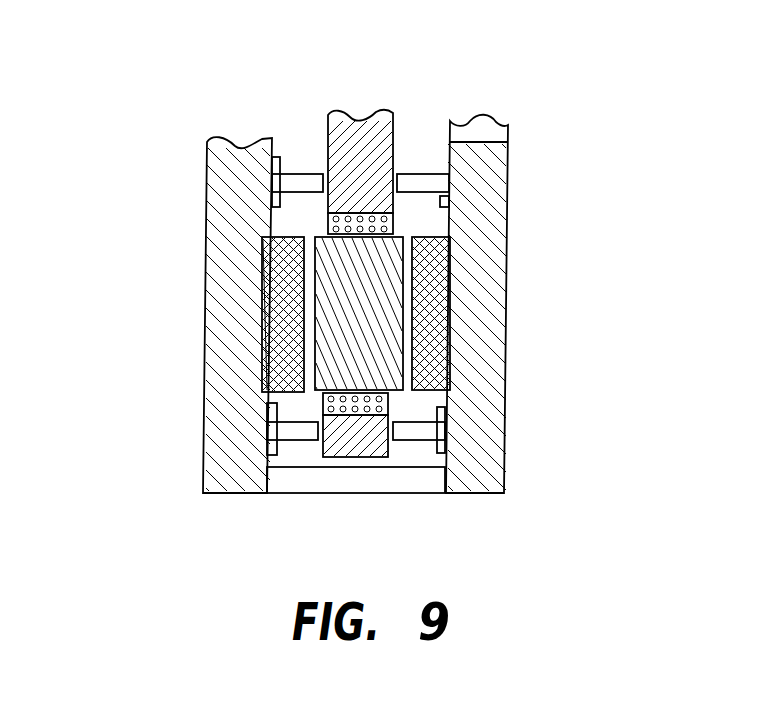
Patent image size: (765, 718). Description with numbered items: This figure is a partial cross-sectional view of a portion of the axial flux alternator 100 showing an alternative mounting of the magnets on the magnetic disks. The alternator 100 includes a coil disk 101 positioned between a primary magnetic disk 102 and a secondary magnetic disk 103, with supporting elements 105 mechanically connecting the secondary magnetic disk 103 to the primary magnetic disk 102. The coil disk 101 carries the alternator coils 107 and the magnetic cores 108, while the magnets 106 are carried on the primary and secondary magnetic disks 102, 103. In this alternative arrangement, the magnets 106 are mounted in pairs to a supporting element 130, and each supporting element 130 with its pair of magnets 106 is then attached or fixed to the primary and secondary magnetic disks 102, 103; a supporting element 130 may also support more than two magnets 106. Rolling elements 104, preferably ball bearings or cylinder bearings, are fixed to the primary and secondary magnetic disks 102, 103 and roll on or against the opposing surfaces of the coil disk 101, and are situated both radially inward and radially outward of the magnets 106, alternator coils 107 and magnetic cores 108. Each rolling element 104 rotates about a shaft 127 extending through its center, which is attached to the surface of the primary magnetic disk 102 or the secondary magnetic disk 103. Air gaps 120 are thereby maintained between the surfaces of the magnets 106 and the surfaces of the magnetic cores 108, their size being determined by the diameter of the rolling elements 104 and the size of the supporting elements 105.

The axial flux alternator 100 is at (183, 116).
The coil disk 101 is at (362, 117).
The primary magnetic disk 102 is at (205, 350).
The secondary magnetic disk 103 is at (508, 163).
The rolling elements 104 is at (305, 172).
The supporting elements 105 is at (345, 495).
The magnets 106 is at (272, 213).
The alternator coils 107 is at (348, 207).
The magnetic cores 108 is at (403, 335).
The air gaps 120 is at (449, 219).
The shaft 127 is at (445, 160).
The supporting element 130 is at (260, 322).